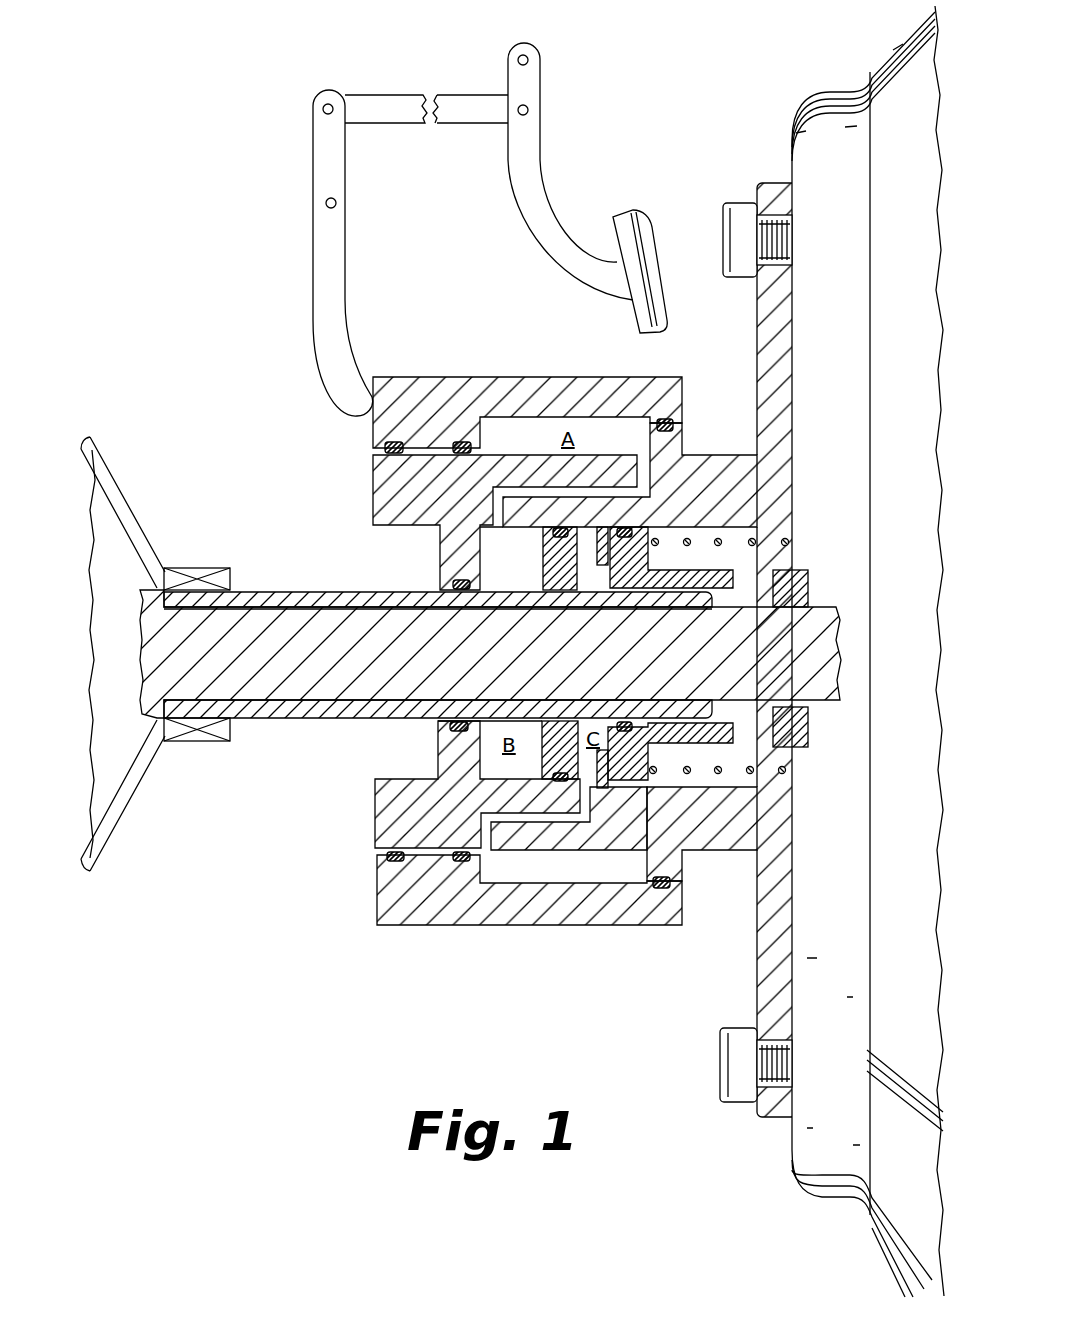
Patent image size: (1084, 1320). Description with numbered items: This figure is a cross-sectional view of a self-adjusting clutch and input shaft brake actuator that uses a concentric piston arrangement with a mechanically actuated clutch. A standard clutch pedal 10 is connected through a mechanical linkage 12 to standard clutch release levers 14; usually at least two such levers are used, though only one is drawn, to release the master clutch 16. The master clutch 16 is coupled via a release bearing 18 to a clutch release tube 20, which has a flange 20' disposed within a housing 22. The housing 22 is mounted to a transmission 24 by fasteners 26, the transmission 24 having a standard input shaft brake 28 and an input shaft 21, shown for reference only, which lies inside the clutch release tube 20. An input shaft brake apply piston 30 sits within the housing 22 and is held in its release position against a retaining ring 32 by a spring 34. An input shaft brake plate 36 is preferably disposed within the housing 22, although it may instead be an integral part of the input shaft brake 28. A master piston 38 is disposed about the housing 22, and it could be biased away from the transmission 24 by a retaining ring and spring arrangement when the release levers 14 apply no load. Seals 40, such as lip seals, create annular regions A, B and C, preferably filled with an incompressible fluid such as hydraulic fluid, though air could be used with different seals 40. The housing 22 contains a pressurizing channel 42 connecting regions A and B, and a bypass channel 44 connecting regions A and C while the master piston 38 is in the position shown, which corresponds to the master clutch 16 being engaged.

The clutch pedal 10 is at (667, 212).
The mechanical linkage 12 is at (397, 97).
The clutch release levers 14 is at (313, 165).
The master clutch 16 is at (107, 452).
The release bearing 18 is at (200, 567).
The clutch release tube 20 is at (438, 626).
The flange 20' is at (508, 653).
The input shaft 21 is at (318, 618).
The housing 22 is at (755, 975).
The transmission 24 is at (842, 62).
The fasteners 26 is at (740, 277).
The input shaft brake 28 is at (824, 750).
The input shaft brake apply piston 30 is at (735, 580).
The retaining ring 32 is at (605, 792).
The spring 34 is at (720, 540).
The input shaft brake plate 36 is at (783, 778).
The master piston 38 is at (472, 927).
The seals 40 is at (664, 420).
The pressurizing channel 42 is at (460, 508).
The bypass channel 44 is at (462, 820).